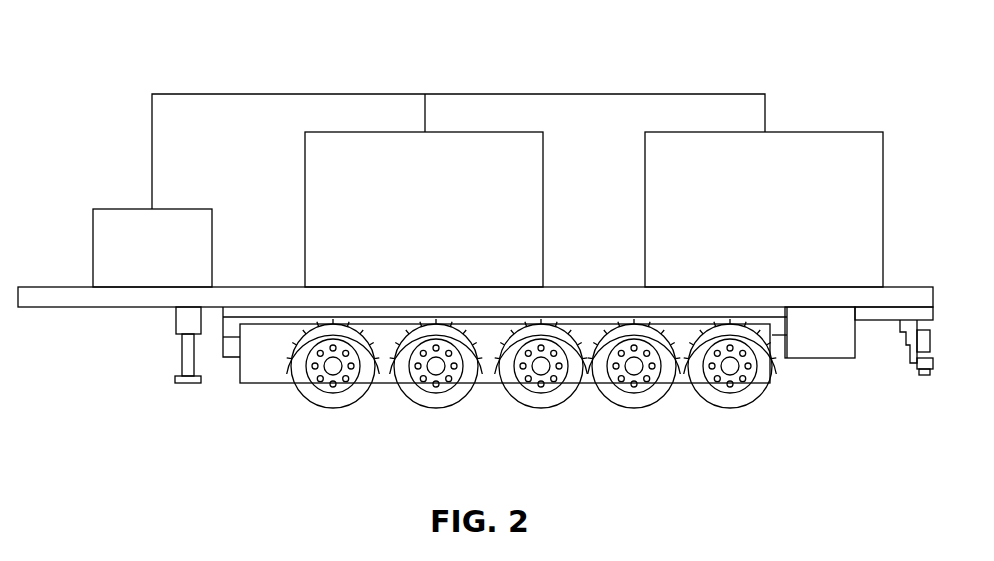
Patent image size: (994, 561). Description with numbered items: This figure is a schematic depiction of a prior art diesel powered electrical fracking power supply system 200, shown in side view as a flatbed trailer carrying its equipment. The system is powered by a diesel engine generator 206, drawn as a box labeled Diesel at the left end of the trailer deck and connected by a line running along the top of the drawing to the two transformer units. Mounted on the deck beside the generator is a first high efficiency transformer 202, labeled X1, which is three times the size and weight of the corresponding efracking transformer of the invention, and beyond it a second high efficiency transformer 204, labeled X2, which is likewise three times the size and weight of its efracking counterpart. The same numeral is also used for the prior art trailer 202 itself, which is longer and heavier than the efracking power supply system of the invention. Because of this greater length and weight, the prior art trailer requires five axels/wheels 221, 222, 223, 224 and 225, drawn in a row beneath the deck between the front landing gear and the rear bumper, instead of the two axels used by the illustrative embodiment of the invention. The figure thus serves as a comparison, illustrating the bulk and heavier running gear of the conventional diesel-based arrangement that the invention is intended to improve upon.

The prior art diesel powered electrical fracking power supply system 200 is at (183, 66).
The first high efficiency transformer 202 is at (272, 286).
The second high efficiency transformer 204 is at (715, 131).
The diesel engine generator 206 is at (122, 207).
The axel/wheel 221 is at (330, 408).
The axel/wheel 222 is at (434, 408).
The axel/wheel 223 is at (538, 408).
The axel/wheel 224 is at (630, 408).
The axel/wheel 225 is at (725, 408).